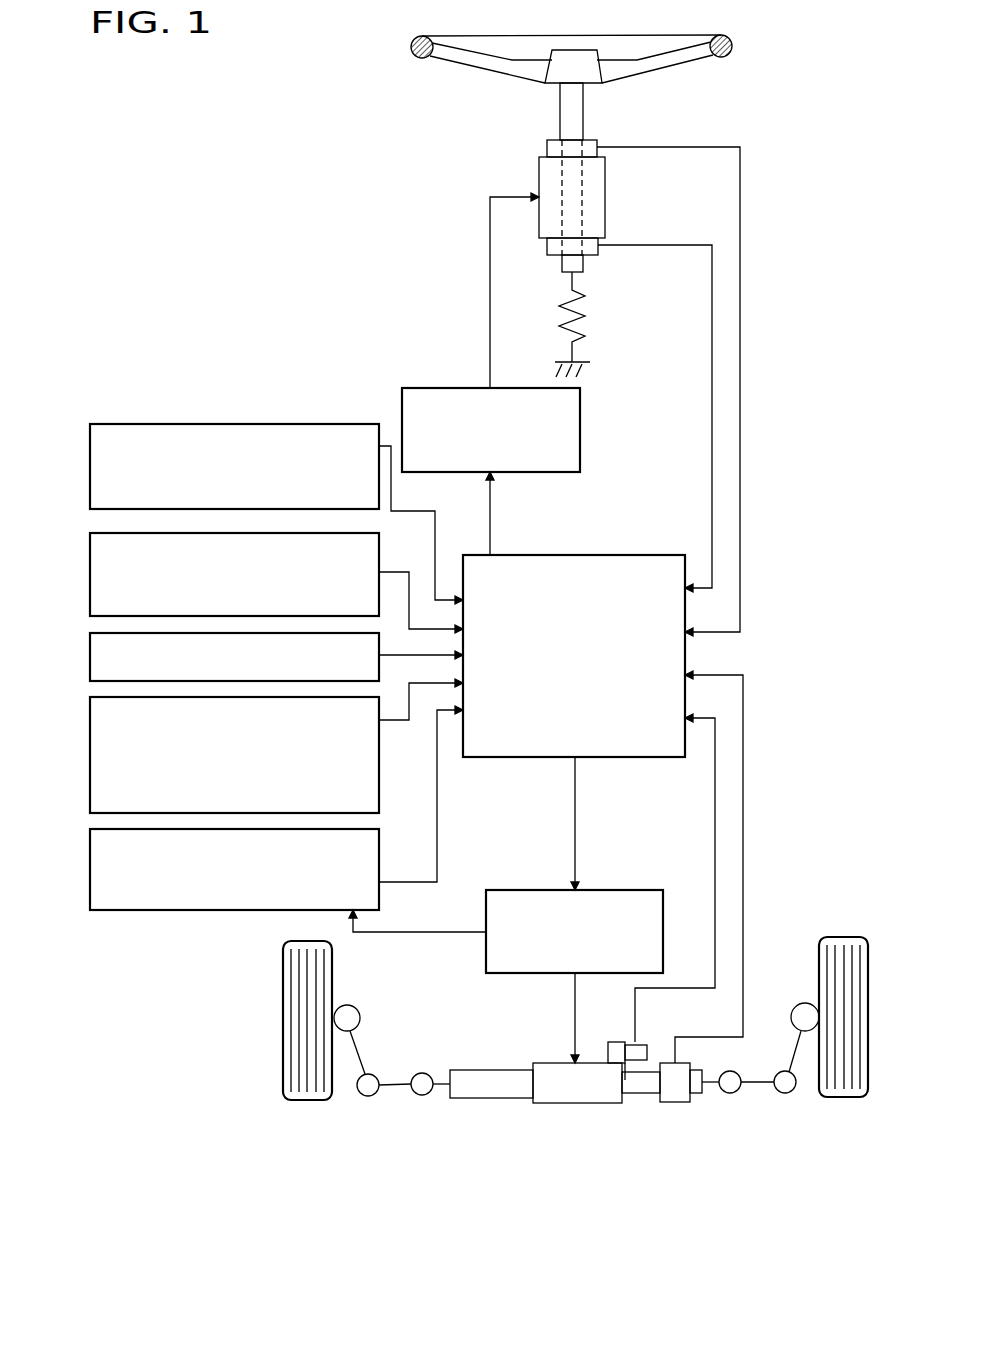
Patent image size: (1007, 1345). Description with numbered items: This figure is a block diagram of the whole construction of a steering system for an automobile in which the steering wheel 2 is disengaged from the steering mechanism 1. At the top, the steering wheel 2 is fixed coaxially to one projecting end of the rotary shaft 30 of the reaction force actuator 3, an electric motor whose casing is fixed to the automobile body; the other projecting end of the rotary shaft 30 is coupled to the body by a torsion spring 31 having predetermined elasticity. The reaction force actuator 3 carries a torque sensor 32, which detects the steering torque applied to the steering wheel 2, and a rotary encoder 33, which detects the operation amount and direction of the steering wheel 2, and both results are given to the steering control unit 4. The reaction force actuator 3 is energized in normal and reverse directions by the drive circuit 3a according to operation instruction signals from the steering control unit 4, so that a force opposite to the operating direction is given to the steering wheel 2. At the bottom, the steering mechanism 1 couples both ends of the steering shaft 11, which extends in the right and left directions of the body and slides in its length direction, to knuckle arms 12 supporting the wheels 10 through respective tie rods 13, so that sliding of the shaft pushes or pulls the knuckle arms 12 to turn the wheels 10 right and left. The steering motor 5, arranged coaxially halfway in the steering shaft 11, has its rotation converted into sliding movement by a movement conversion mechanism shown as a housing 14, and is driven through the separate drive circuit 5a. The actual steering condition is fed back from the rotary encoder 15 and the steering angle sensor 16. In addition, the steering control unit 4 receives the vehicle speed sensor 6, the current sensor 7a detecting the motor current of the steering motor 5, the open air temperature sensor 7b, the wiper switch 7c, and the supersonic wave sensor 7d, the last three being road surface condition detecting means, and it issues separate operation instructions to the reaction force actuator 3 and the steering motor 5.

The steering mechanism 1 is at (612, 1135).
The steering wheel 2 is at (411, 47).
The reaction force actuator 3 is at (539, 175).
The drive circuit 3a is at (445, 388).
The steering control unit 4 is at (618, 553).
The steering motor 5 is at (575, 1103).
The drive circuit 5a is at (607, 888).
The vehicle speed sensor 6 is at (90, 467).
The current sensor 7a is at (90, 884).
The open air temperature sensor 7b is at (90, 722).
The wiper switch 7c is at (90, 655).
The supersonic wave sensor 7d is at (90, 574).
The wheels 10 is at (303, 1100).
The steering shaft 11 is at (440, 1083).
The knuckle arms 12 is at (352, 1057).
The tie rods 13 is at (395, 1087).
The rack shaft 14 is at (483, 1098).
The rotary encoder 15 is at (638, 1042).
The steering angle sensor 16 is at (675, 1102).
The rotary shaft 30 is at (583, 108).
The torsion spring 31 is at (584, 330).
The torque sensor 32 is at (547, 147).
The rotary encoder 33 is at (590, 257).